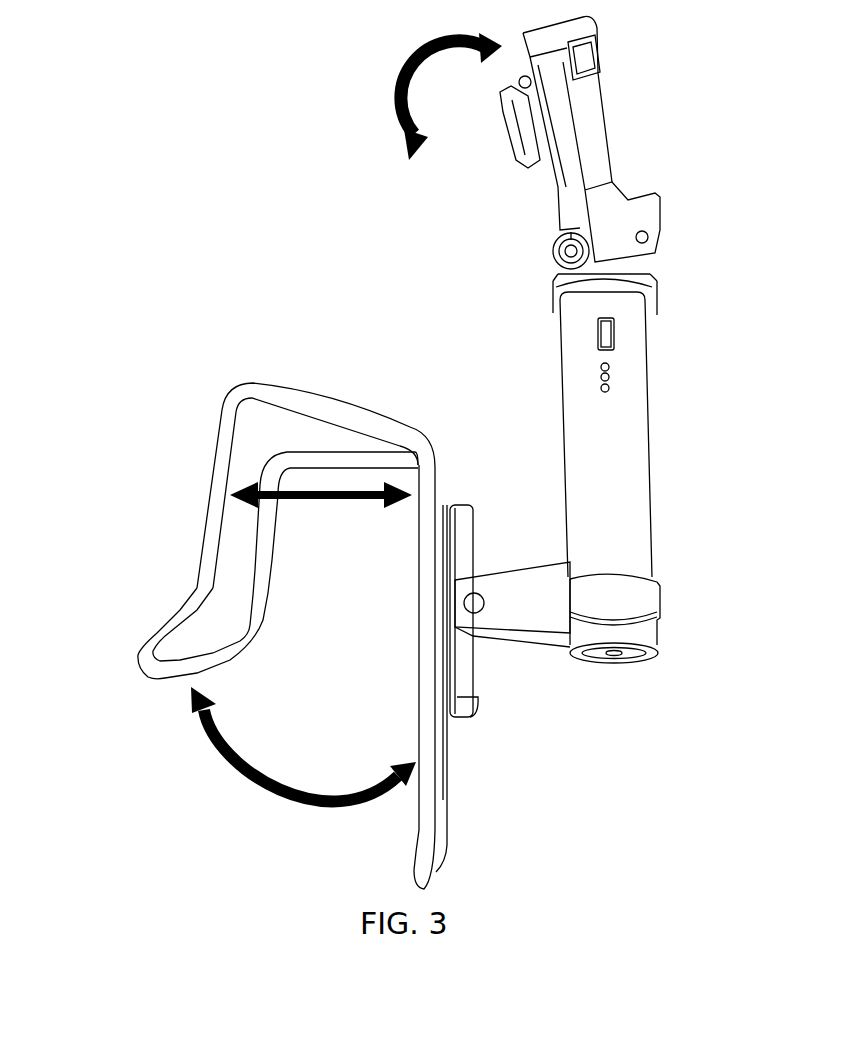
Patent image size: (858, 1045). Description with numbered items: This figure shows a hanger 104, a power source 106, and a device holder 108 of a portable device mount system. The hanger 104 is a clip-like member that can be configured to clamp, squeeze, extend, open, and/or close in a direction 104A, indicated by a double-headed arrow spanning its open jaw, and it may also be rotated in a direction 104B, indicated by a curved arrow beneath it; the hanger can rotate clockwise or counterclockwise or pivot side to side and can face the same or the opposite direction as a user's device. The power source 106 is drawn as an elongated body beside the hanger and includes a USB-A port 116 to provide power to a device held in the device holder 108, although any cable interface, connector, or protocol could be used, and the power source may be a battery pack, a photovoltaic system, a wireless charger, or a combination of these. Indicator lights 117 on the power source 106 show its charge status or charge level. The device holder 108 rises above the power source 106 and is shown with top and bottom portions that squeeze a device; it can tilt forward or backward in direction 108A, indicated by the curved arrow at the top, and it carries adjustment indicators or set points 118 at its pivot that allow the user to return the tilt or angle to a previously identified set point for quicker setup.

The hanger 104 is at (177, 488).
The direction 104A is at (330, 514).
The direction 104B is at (185, 728).
The power source 106 is at (691, 468).
The device holder 108 is at (628, 128).
The direction 108A is at (400, 35).
The USB-A port 116 is at (627, 335).
The indicator lights 117 is at (618, 370).
The adjustment indicators or set points 118 is at (550, 238).